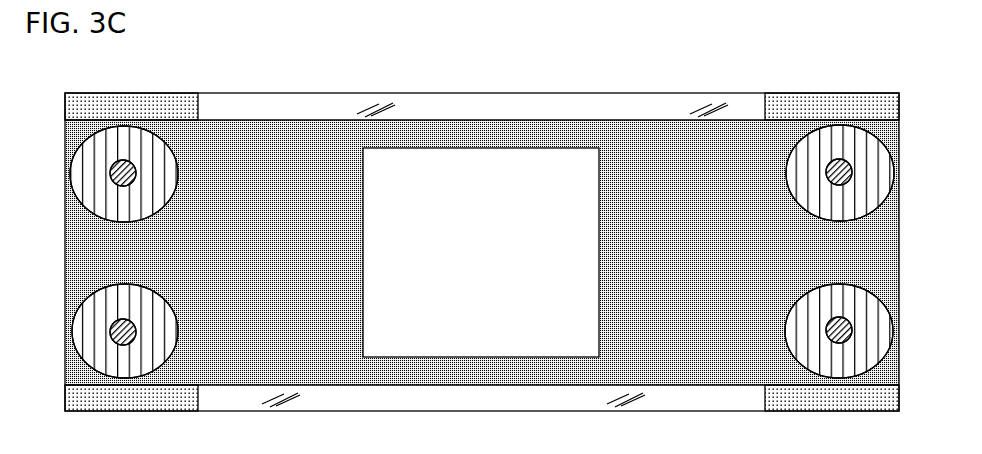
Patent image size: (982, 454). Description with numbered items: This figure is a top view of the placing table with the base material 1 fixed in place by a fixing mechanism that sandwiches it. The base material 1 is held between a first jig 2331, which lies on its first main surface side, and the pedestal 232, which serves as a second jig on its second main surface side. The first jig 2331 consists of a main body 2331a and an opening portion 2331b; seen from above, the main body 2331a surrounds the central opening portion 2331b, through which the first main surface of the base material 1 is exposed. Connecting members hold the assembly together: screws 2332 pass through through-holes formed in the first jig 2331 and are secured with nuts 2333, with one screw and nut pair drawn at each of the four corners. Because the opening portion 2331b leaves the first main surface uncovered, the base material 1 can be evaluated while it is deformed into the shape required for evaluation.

The base material 1 is at (512, 114).
The pedestal 232 is at (153, 107).
The first jig 2331 is at (337, 353).
The main body 2331a is at (658, 156).
The opening portion 2331b is at (403, 155).
The screw 2332 is at (127, 168).
The nut 2333 is at (820, 152).